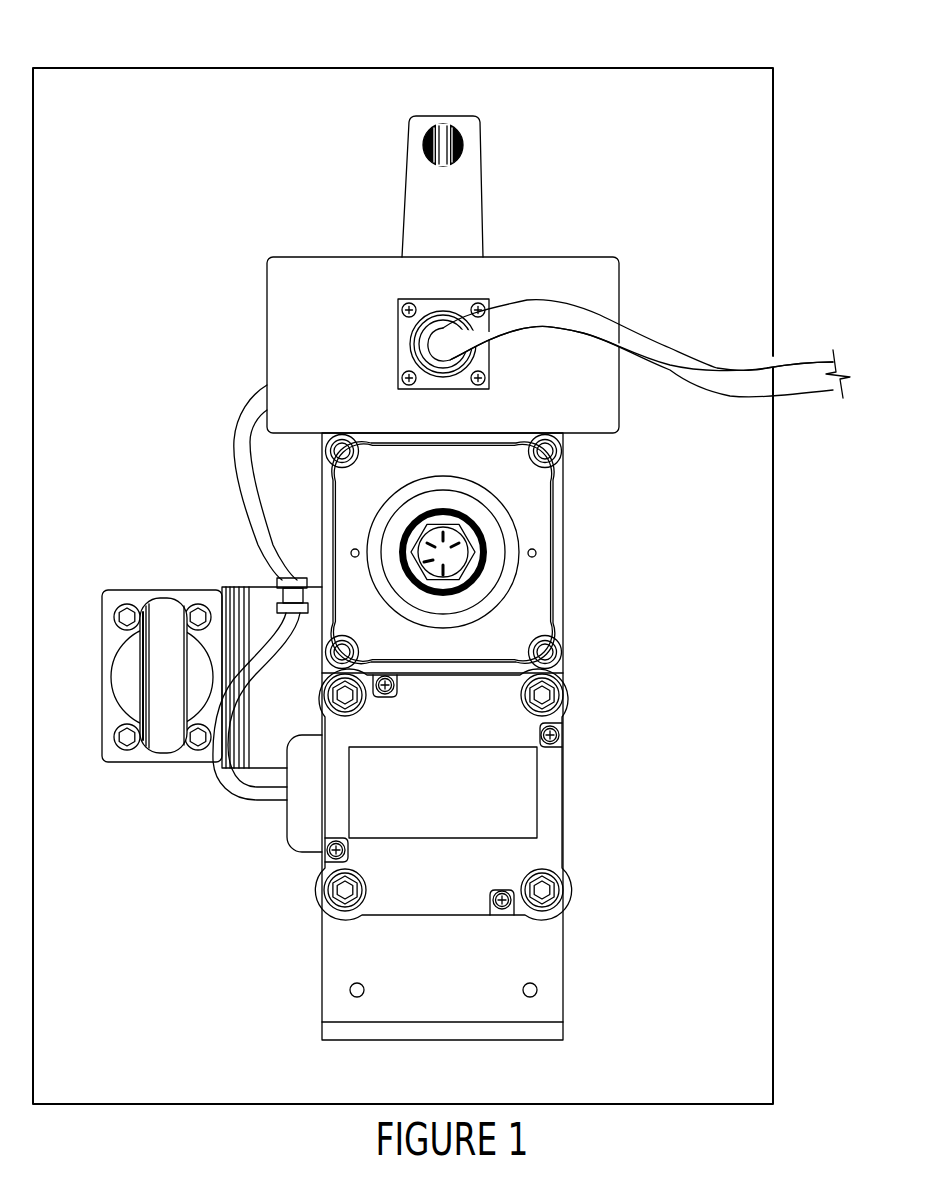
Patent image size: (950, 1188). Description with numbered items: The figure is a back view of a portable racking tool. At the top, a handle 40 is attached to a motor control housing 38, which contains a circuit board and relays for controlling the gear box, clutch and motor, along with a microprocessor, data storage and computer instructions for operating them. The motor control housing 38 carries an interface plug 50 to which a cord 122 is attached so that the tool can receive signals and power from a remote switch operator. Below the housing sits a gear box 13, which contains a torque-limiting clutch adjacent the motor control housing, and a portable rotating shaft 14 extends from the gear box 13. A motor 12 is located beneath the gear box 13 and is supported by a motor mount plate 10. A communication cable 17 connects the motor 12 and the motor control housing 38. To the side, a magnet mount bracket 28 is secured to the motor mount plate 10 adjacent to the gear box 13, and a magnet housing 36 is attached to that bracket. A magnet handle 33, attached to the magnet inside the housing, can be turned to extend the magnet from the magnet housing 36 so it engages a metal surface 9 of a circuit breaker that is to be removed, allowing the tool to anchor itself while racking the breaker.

The metal surface 9 is at (91, 90).
The motor mount plate 10 is at (533, 940).
The motor 12 is at (548, 797).
The gear box 13 is at (533, 532).
The portable rotating shaft 14 is at (443, 553).
The communication cable 17 is at (240, 440).
The magnet mount bracket 28 is at (267, 593).
The magnet handle 33 is at (170, 618).
The magnet housing 36 is at (158, 764).
The motor control housing 38 is at (295, 278).
The handle 40 is at (470, 195).
The interface plug 50 is at (410, 347).
The cord 122 is at (728, 380).